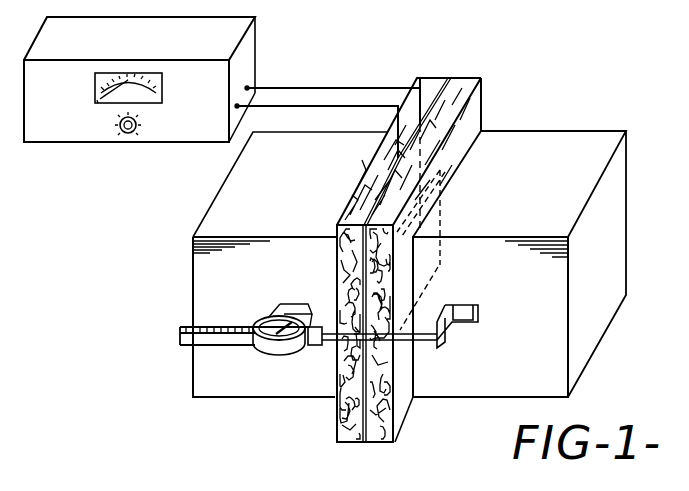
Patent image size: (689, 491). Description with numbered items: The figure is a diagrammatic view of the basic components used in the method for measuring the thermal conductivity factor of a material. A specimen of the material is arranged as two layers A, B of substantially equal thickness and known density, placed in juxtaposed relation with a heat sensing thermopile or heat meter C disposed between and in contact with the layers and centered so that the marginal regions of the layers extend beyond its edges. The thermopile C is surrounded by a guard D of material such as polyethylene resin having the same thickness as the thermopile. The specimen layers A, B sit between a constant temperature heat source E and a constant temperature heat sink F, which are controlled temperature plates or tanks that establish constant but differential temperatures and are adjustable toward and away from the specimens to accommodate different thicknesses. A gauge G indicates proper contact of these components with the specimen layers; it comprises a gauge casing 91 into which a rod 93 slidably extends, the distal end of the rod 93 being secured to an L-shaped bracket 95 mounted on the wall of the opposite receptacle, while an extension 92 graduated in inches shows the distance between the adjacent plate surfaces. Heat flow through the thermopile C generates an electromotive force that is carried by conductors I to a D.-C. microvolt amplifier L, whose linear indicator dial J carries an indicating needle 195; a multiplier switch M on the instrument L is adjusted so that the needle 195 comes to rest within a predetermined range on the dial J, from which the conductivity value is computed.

The D.-C. microvolt amplifier L is at (252, 48).
The indicating needle 195 is at (113, 90).
The indicator dial J is at (99, 102).
The multiplier switch M is at (128, 131).
The conductors I is at (315, 104).
The specimen layer A is at (428, 82).
The specimen layer B is at (467, 82).
The thermopile C is at (442, 210).
The guard D is at (352, 412).
The constant temperature heat source E is at (225, 200).
The constant temperature heat sink F is at (590, 142).
The gauge G is at (265, 318).
The extension 92 is at (209, 326).
The gauge casing 91 is at (264, 346).
The rod 93 is at (326, 344).
The L-shaped bracket 95 is at (448, 328).